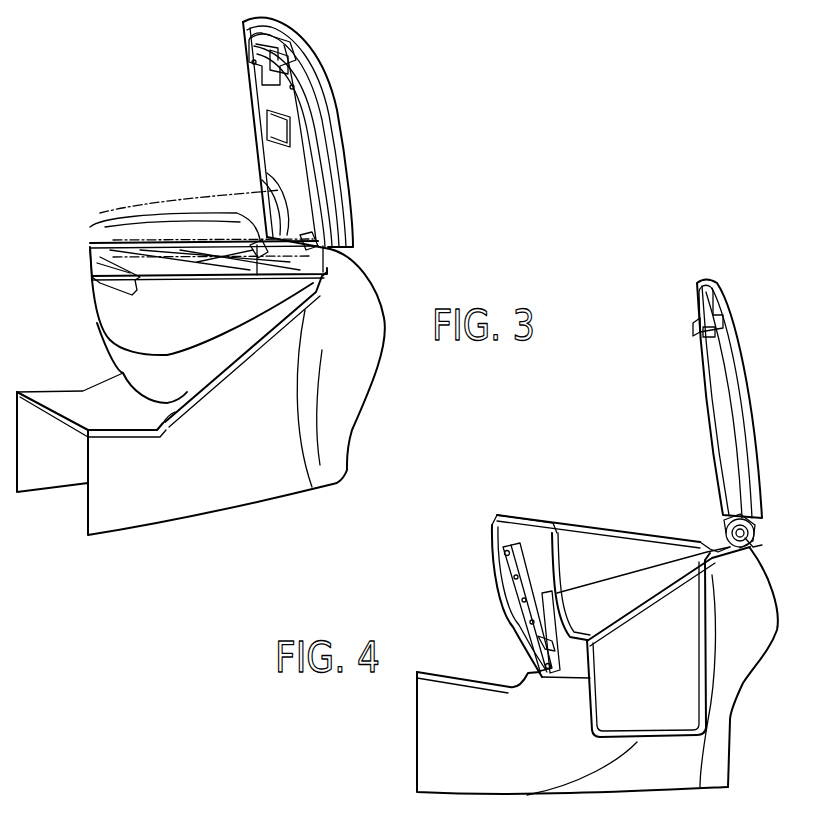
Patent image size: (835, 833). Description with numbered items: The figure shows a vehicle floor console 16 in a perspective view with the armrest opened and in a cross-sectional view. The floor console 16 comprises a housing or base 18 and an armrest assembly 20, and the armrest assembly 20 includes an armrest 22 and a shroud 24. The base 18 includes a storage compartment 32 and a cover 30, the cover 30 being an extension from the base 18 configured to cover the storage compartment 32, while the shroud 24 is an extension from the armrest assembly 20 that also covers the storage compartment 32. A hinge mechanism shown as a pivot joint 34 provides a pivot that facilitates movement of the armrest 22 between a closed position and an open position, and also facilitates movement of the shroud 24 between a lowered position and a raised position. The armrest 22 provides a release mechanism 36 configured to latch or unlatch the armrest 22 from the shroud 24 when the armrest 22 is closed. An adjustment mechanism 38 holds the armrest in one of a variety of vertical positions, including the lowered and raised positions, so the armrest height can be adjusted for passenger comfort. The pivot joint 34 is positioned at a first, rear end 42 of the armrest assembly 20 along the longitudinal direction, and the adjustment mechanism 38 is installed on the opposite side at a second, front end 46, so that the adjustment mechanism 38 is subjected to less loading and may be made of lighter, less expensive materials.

In FIG. 3, the floor console 16 is at (387, 288).
In FIG. 4, the floor console 16 is at (773, 599).
In FIG. 3, the base 18 is at (333, 435).
In FIG. 4, the base 18 is at (723, 737).
In FIG. 3, the armrest assembly 20 is at (244, 138).
In FIG. 4, the armrest assembly 20 is at (727, 414).
In FIG. 3, the armrest 22 is at (338, 103).
In FIG. 4, the armrest 22 is at (742, 347).
In FIG. 3, the shroud 24 is at (247, 310).
In FIG. 4, the shroud 24 is at (612, 531).
In FIG. 3, the cover 30 is at (228, 362).
In FIG. 4, the cover 30 is at (513, 633).
In FIG. 3, the storage compartment 32 is at (262, 250).
In FIG. 4, the storage compartment 32 is at (650, 624).
In FIG. 3, the pivot joint 34 is at (262, 170).
In FIG. 4, the pivot joint 34 is at (725, 523).
In FIG. 3, the release mechanism 36 is at (267, 72).
In FIG. 4, the release mechanism 36 is at (700, 307).
In FIG. 4, the adjustment mechanism 38 is at (542, 534).
In FIG. 4, the first end 42 is at (764, 546).
In FIG. 4, the second end 46 is at (498, 504).